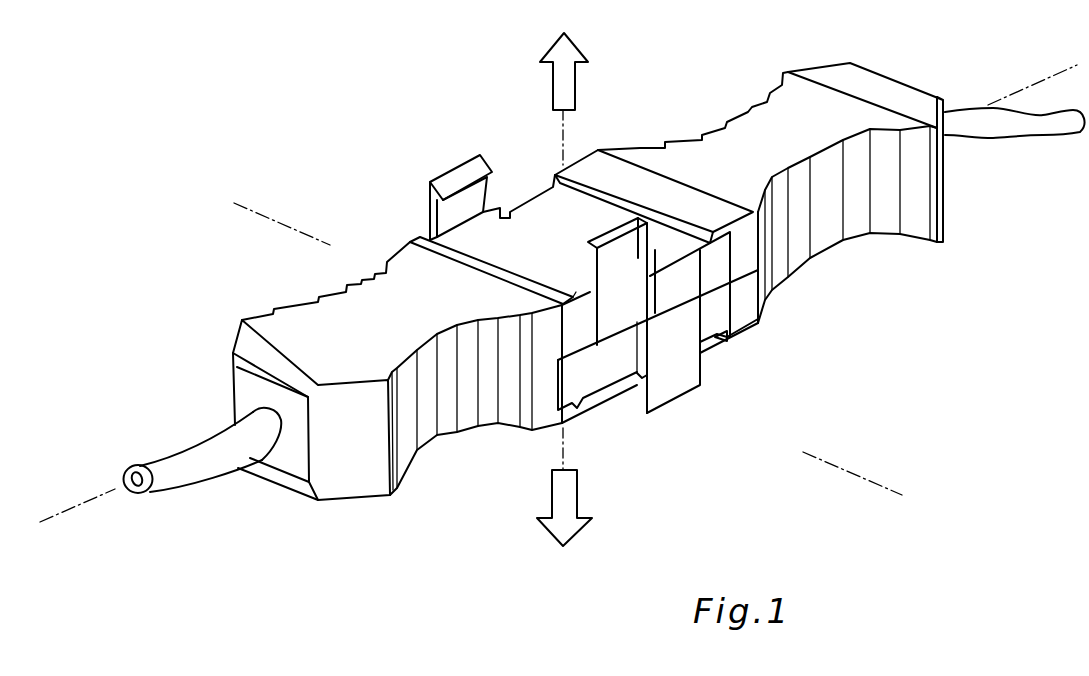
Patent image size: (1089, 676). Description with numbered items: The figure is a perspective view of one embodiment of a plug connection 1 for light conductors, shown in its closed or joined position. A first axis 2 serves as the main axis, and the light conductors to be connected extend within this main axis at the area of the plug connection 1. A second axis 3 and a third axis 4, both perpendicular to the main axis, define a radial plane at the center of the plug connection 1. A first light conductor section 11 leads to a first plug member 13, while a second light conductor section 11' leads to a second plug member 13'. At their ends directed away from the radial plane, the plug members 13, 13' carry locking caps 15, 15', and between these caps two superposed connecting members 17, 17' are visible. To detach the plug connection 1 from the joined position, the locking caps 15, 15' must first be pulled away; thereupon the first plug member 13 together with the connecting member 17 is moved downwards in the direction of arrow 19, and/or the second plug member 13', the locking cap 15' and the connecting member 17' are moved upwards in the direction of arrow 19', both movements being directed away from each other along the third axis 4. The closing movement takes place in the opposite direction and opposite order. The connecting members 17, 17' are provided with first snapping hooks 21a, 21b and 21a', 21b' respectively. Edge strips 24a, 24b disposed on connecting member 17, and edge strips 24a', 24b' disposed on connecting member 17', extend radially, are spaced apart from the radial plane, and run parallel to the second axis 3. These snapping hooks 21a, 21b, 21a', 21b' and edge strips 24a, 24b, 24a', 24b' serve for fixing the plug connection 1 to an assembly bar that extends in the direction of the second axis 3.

The plug connection 1 is at (752, 438).
The first axis 2 is at (72, 503).
The second axis 3 is at (267, 217).
The third axis 4 is at (563, 130).
The first light conductor section 11 is at (1014, 155).
The second light conductor section 11' is at (203, 474).
The first plug member 13 is at (846, 235).
The second plug member 13' is at (442, 326).
The locking cap 15 is at (770, 152).
The locking cap 15' is at (321, 371).
The connecting member 17 is at (660, 391).
The connecting member 17' is at (606, 231).
The arrow 19 is at (544, 508).
The arrow 19' is at (536, 71).
The first snapping hook 21a is at (708, 331).
The first snapping hook 21a' is at (439, 184).
The first snapping hook 21b is at (657, 423).
The first snapping hook 21b' is at (575, 315).
The edge strip 24a is at (658, 362).
The edge strip 24a' is at (481, 276).
The edge strip 24b is at (759, 347).
The edge strip 24b' is at (654, 166).